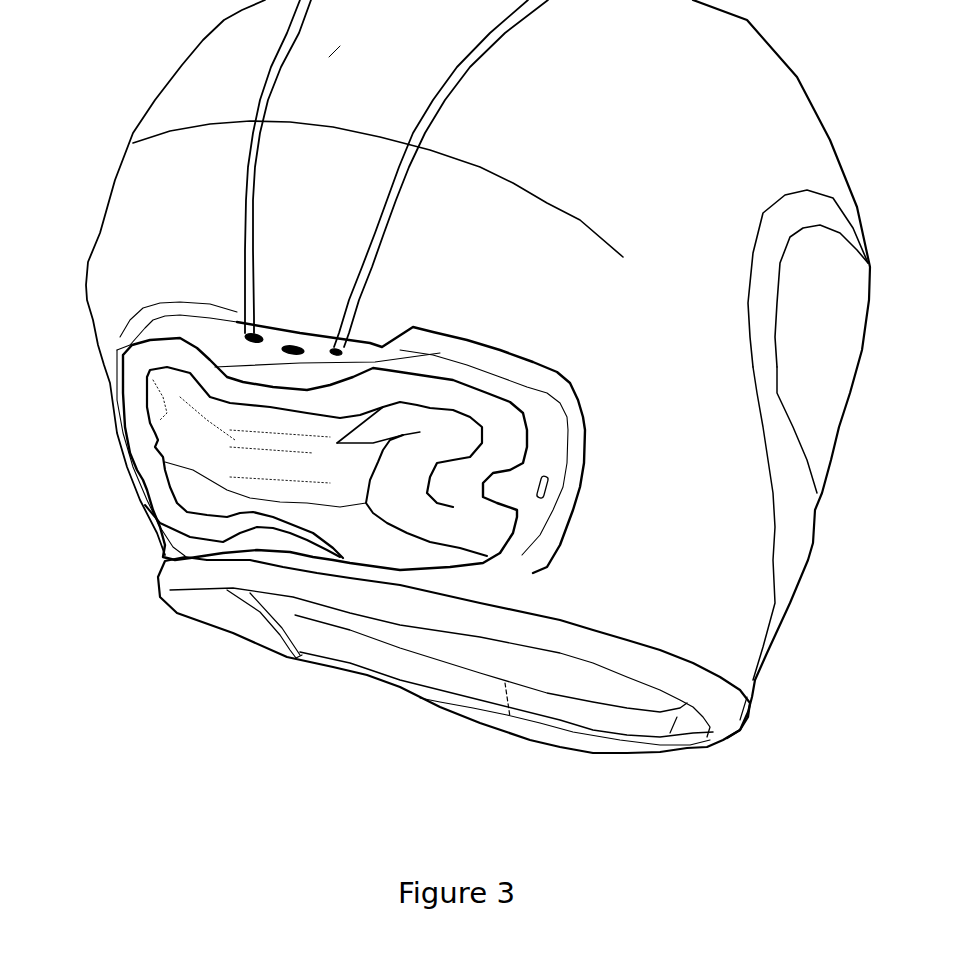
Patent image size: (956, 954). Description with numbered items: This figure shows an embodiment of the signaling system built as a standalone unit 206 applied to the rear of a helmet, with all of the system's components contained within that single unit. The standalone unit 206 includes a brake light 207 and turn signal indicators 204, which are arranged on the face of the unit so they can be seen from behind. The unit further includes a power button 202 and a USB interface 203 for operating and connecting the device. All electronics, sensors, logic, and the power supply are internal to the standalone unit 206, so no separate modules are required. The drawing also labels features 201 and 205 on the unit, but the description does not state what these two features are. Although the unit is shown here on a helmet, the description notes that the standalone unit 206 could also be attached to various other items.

The lens 201 is at (260, 425).
The power button 202 is at (296, 333).
The USB interface 203 is at (364, 348).
The turn signal indicators 204 is at (275, 397).
The frame slot 205 is at (480, 528).
The standalone unit 206 is at (280, 540).
The brake light 207 is at (233, 462).